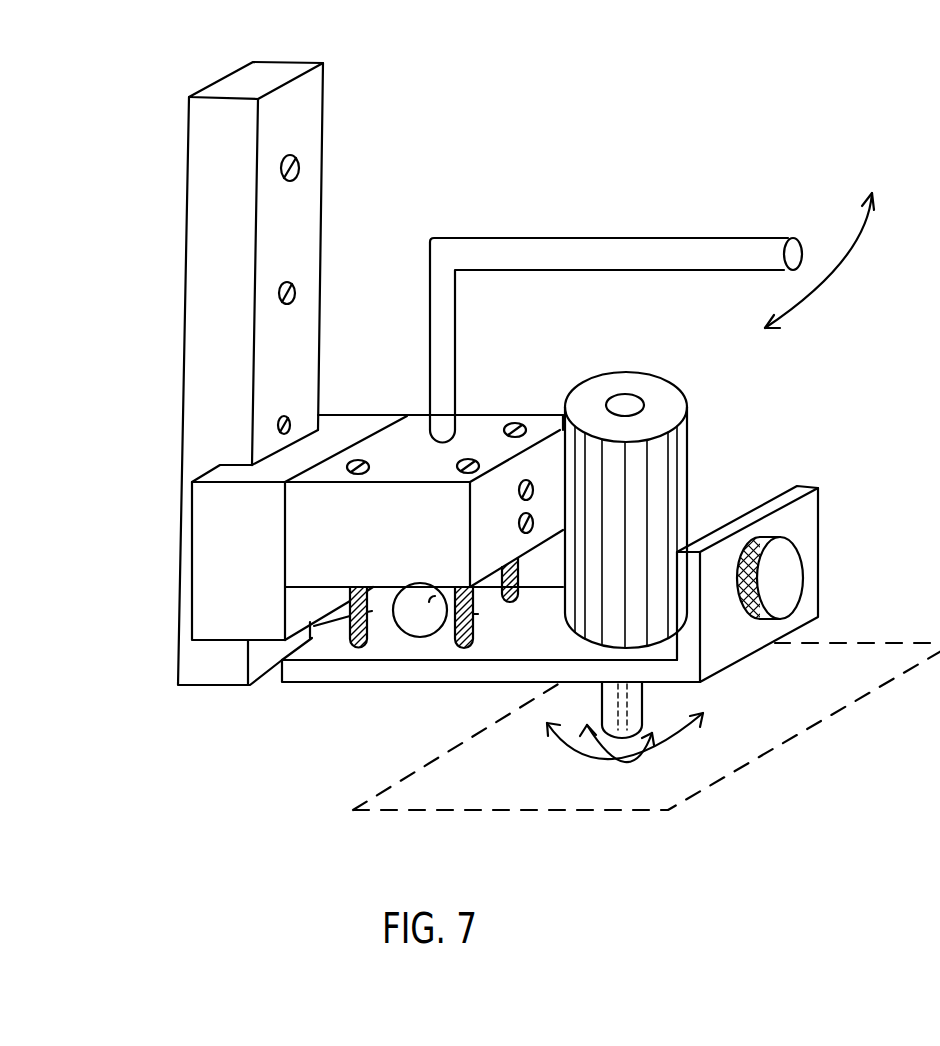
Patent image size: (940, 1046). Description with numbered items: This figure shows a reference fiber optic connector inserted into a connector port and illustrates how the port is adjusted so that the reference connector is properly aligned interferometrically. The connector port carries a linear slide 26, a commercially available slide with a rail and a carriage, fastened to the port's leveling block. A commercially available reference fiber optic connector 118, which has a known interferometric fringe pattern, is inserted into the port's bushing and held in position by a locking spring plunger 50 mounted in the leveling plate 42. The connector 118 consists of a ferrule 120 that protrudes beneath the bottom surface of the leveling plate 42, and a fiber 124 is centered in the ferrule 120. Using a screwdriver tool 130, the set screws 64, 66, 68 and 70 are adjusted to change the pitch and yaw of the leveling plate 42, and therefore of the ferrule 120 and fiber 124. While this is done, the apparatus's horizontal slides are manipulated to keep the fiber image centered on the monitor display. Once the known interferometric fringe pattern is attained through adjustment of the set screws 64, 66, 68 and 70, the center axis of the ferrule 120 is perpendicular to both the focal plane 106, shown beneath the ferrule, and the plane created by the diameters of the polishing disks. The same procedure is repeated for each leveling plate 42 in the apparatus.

The linear slide 26 is at (172, 333).
The screwdriver tool 130 is at (638, 233).
The set screw 70 is at (423, 423).
The set screw 64 is at (528, 420).
The set screw 68 is at (345, 473).
The set screw 66 is at (453, 470).
The reference fiber optic connector 118 is at (690, 422).
The leveling plate 42 is at (803, 533).
The locking spring plunger 50 is at (785, 586).
The fiber 124 is at (607, 702).
The ferrule 120 is at (643, 700).
The focal plane 106 is at (730, 745).